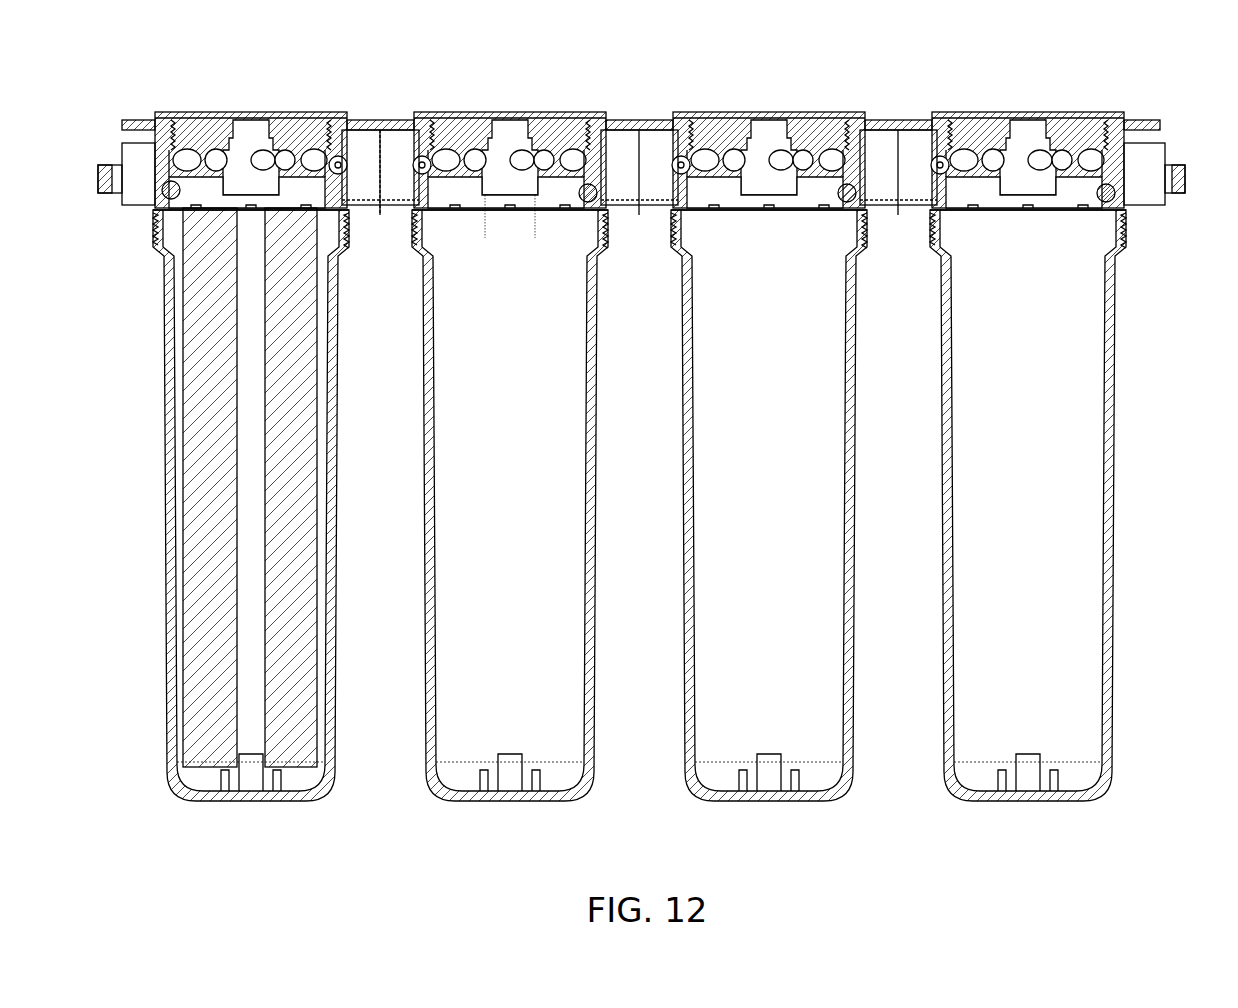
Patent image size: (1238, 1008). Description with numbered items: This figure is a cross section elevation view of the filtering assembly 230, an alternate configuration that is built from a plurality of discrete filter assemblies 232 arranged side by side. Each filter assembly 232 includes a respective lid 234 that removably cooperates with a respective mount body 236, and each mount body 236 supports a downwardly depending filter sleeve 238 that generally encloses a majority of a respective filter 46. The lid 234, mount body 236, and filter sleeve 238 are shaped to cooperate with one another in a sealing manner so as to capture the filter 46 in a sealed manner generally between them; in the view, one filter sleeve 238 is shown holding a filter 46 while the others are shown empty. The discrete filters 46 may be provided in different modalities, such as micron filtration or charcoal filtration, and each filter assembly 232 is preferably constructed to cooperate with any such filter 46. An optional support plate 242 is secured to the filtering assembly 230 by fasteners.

The filtering assembly 230 is at (652, 430).
The filter assembly 232 is at (660, 430).
The lid 234 is at (305, 120).
The mount body 236 is at (365, 120).
The filter sleeve 238 is at (330, 782).
The support plate 242 is at (140, 120).
The filter 46 is at (300, 415).